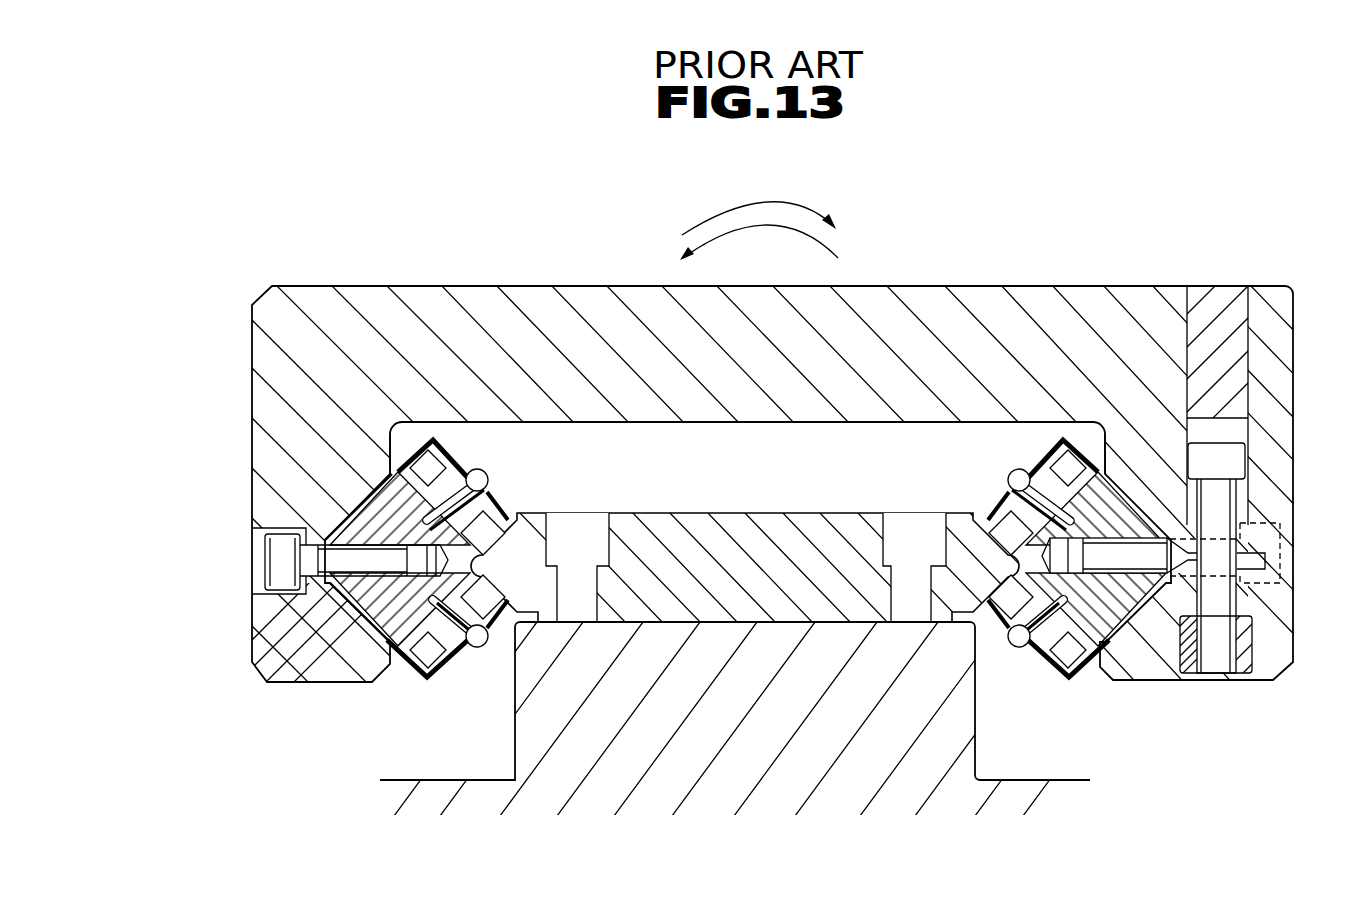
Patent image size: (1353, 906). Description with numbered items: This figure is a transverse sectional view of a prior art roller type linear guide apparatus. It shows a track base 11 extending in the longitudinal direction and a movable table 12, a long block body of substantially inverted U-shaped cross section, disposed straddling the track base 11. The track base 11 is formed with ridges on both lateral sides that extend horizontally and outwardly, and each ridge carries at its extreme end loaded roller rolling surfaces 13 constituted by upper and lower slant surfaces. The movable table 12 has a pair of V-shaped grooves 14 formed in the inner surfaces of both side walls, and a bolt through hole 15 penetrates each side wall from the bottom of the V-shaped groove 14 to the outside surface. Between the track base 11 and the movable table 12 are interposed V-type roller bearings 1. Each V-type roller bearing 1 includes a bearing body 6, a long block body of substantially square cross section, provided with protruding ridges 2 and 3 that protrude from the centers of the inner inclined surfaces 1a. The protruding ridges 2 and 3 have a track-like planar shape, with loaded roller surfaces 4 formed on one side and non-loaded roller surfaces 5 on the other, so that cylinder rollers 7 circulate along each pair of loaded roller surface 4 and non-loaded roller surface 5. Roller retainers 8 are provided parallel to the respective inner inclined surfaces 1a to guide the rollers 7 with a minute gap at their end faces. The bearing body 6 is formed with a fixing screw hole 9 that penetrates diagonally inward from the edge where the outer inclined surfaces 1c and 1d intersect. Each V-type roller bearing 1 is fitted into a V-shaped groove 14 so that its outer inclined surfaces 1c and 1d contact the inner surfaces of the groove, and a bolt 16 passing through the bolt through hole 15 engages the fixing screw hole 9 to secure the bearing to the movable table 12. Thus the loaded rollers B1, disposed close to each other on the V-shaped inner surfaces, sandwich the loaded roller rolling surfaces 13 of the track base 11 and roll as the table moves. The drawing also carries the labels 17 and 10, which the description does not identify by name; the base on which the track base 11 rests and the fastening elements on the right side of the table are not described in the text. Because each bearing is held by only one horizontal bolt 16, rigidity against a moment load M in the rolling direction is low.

The V-type roller bearing 1 is at (505, 478).
The inner inclined surface 1a is at (428, 440).
The outer inclined surface 1c is at (335, 522).
The outer inclined surface 1d is at (348, 598).
The protruding ridge 2 is at (468, 468).
The protruding ridge 3 is at (456, 660).
The loaded roller surface 4 is at (497, 508).
The non-loaded roller surface 5 is at (456, 478).
The bearing body 6 is at (308, 672).
The cylinder roller 7 is at (392, 675).
The roller retainer 8 is at (456, 445).
The fixing screw hole 9 is at (328, 590).
The track base 11 is at (820, 607).
The movable table 12 is at (955, 310).
The loaded roller rolling surface 13 is at (540, 548).
The V-shaped groove 14 is at (382, 498).
The bolt through hole 15 is at (263, 540).
The bolt 16 is at (262, 569).
The loaded roller B1 is at (747, 565).
The moment load M is at (759, 211).
The set screw and clamp bolt 17 is at (1176, 594).
The bed 10 is at (773, 719).